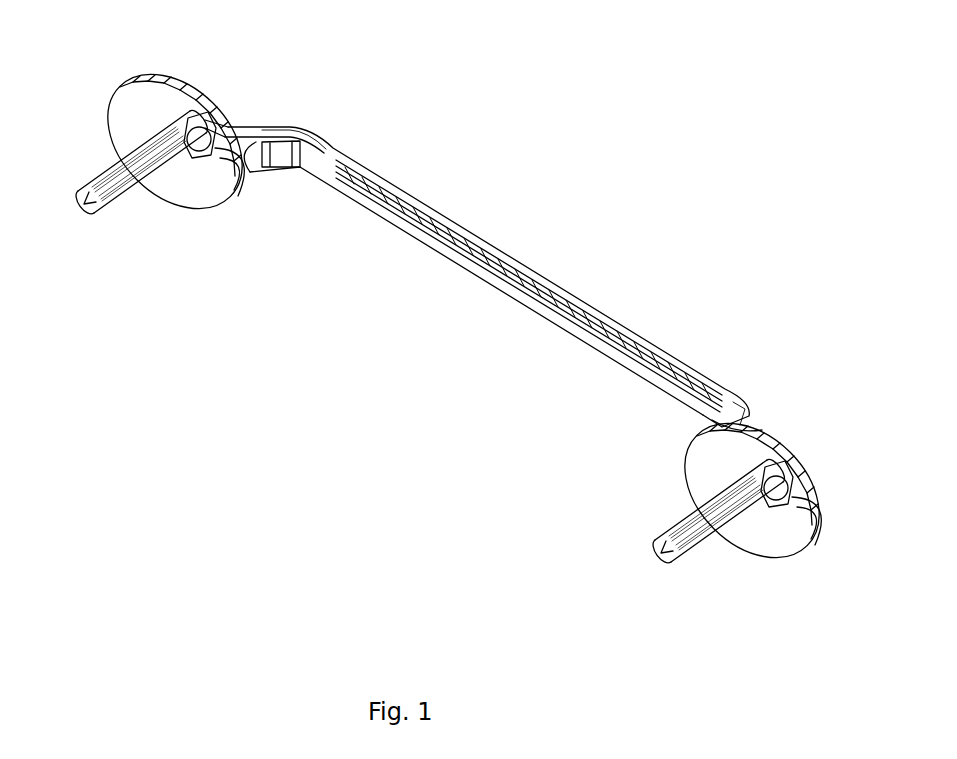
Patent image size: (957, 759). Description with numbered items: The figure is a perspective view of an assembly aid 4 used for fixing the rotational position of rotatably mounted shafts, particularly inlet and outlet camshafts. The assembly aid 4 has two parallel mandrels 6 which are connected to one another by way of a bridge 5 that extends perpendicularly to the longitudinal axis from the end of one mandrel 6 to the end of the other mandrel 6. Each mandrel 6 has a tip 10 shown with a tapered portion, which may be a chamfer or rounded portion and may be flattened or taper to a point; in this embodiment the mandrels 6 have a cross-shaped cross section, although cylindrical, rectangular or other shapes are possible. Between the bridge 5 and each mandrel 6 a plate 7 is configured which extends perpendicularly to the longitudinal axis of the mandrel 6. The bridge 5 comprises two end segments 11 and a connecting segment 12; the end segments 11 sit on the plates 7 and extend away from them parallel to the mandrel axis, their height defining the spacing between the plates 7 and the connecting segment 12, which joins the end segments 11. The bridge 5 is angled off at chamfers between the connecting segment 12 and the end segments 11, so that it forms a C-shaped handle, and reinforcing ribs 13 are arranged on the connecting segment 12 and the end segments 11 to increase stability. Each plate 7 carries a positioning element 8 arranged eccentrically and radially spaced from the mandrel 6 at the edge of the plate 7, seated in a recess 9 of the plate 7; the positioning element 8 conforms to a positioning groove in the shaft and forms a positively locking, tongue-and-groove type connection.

The assembly aid 4 is at (578, 165).
The bridge 5 is at (545, 312).
The mandrel 6 is at (135, 203).
The plate 7 is at (130, 123).
The positioning element 8 is at (200, 180).
The recess 9 is at (237, 180).
The tip 10 is at (90, 228).
The end segment 11 is at (250, 127).
The connecting segment 12 is at (610, 321).
The reinforcing rib 13 is at (355, 150).